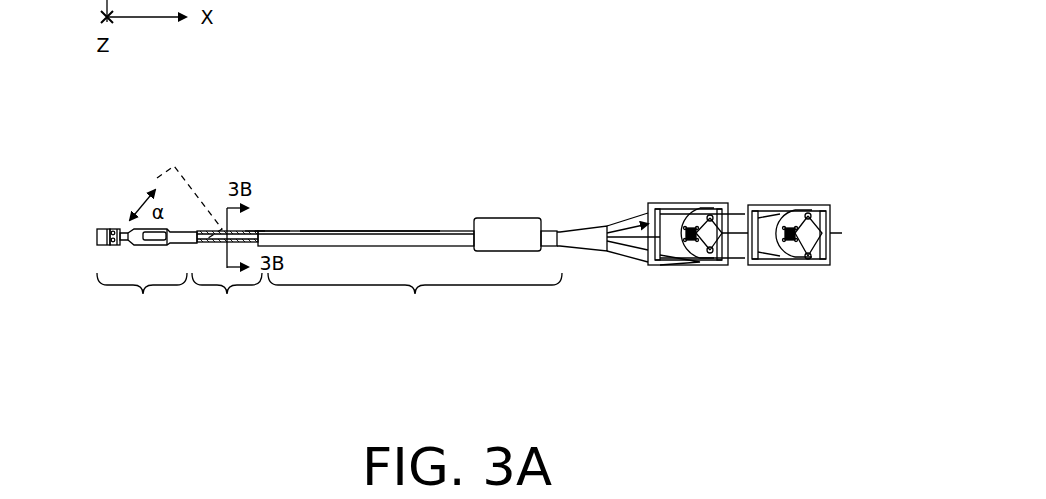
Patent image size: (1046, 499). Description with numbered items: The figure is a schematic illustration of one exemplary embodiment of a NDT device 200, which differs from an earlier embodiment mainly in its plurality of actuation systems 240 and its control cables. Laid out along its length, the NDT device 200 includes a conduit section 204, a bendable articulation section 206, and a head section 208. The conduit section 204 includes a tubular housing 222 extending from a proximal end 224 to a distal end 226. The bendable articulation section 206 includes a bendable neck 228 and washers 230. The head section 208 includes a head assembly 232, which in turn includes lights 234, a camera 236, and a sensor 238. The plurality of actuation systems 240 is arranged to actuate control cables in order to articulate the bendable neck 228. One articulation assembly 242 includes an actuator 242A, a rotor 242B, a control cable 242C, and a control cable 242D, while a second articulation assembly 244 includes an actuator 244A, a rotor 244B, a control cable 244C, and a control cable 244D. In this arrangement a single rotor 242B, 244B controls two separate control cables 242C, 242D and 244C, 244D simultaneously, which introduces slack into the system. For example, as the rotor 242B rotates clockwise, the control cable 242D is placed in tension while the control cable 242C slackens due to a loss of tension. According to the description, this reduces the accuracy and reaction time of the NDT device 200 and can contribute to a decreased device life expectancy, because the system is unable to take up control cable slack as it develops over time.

The NDT device 200 is at (200, 137).
The conduit section 204 is at (410, 277).
The bendable articulation section 206 is at (227, 277).
The head section 208 is at (147, 276).
The tubular housing 222 is at (370, 229).
The proximal end 224 is at (548, 221).
The distal end 226 is at (282, 231).
The bendable neck 228 is at (262, 230).
The washers 230 is at (256, 230).
The head assembly 232 is at (93, 253).
The lights 234 is at (115, 230).
The camera 236 is at (120, 232).
The sensor 238 is at (150, 240).
The plurality of actuation systems 240 is at (718, 172).
The articulation assembly 242 is at (700, 193).
The actuator 242A is at (730, 260).
The rotor 242B is at (682, 210).
The control cable 242C is at (622, 250).
The control cable 242D is at (626, 222).
The articulation assembly 244 is at (845, 215).
The actuator 244A is at (832, 258).
The rotor 244B is at (797, 209).
The control cable 244C is at (753, 253).
The control cable 244D is at (756, 208).